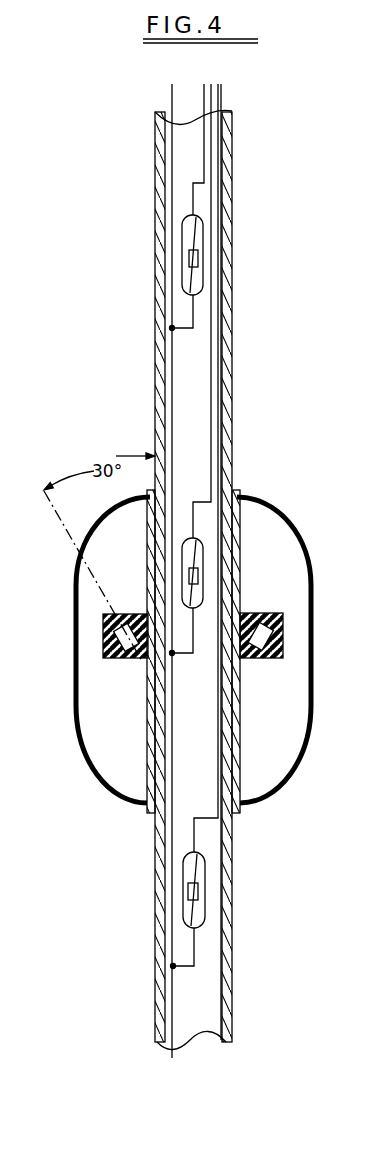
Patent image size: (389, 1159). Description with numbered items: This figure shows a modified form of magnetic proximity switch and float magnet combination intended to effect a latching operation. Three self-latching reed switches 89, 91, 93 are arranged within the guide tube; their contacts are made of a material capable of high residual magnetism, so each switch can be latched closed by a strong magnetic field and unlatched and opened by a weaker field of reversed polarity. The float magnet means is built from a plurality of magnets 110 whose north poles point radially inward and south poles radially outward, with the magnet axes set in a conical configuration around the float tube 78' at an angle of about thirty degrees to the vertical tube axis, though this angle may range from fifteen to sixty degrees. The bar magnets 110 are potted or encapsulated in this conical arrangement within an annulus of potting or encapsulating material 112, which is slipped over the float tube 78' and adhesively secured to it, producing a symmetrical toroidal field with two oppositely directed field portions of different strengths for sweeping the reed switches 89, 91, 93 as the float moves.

The self-latching reed switch 93 is at (203, 236).
The self-latching reed switch 91 is at (182, 553).
The self-latching reed switch 89 is at (205, 865).
The float tube 78' is at (210, 651).
The magnets 110 is at (125, 658).
The potting or encapsulating material 112 is at (283, 624).